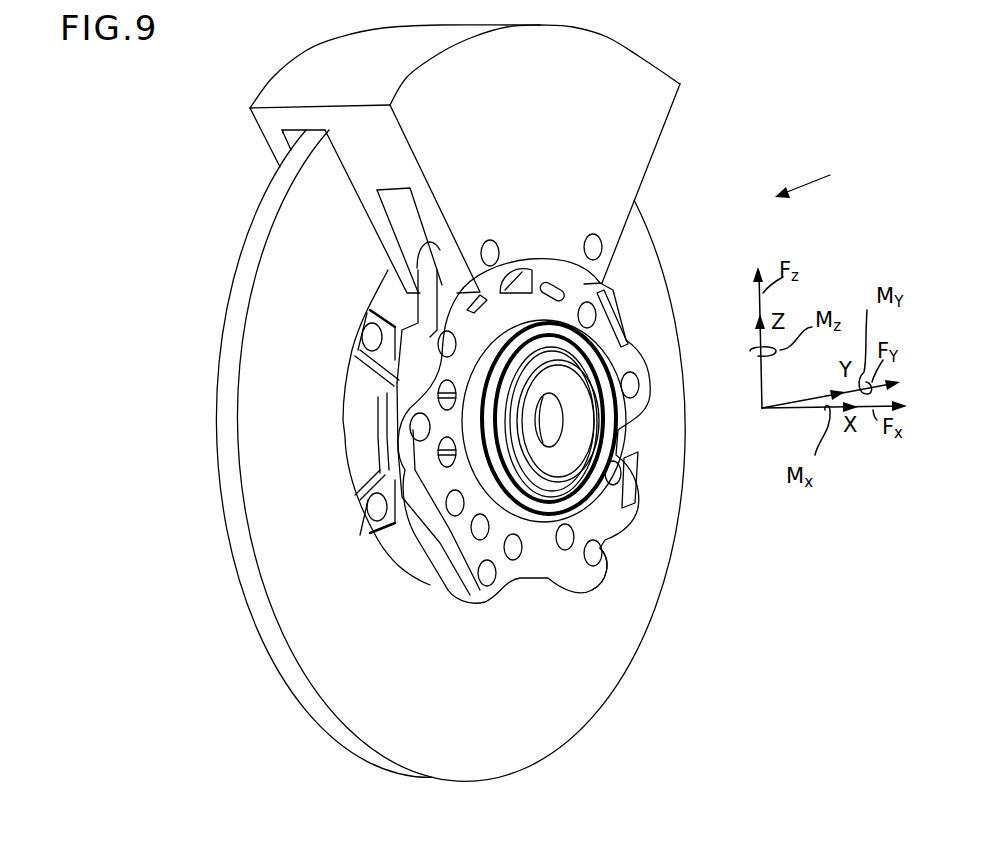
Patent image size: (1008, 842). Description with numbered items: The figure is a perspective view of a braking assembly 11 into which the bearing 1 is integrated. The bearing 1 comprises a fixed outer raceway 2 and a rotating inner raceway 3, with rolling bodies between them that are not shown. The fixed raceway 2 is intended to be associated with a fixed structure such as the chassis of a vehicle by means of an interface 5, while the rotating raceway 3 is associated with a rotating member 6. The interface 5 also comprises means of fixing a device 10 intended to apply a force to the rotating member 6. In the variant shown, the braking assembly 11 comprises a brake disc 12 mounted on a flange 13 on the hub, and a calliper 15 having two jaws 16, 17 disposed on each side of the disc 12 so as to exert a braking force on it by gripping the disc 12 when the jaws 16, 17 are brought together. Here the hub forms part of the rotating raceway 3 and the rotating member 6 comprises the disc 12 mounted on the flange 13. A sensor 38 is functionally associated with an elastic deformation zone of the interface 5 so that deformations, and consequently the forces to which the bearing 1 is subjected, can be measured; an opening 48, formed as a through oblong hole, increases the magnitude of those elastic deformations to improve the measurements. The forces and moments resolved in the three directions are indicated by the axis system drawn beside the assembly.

The bearing 1 is at (630, 343).
The fixed outer raceway 2 is at (612, 412).
The rotating inner raceway 3 is at (547, 497).
The interface 5 is at (603, 330).
The rotating member 6 is at (583, 442).
The device intended to apply a force to the rotating member 10 is at (668, 89).
The braking assembly 11 is at (826, 181).
The brake disc 12 is at (578, 717).
The flange 13 is at (405, 563).
The calliper 15 is at (632, 184).
The jaw 16 is at (272, 145).
The jaw 17 is at (383, 223).
The sensor 38 is at (632, 485).
The opening 48 is at (605, 522).